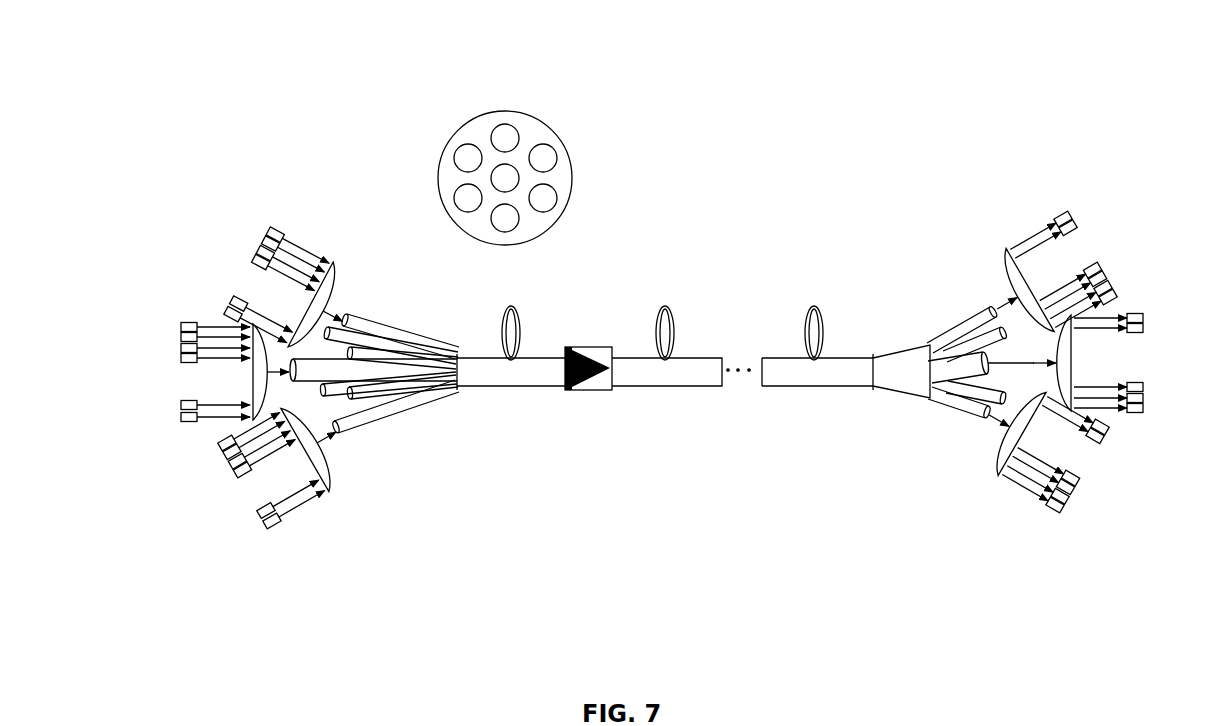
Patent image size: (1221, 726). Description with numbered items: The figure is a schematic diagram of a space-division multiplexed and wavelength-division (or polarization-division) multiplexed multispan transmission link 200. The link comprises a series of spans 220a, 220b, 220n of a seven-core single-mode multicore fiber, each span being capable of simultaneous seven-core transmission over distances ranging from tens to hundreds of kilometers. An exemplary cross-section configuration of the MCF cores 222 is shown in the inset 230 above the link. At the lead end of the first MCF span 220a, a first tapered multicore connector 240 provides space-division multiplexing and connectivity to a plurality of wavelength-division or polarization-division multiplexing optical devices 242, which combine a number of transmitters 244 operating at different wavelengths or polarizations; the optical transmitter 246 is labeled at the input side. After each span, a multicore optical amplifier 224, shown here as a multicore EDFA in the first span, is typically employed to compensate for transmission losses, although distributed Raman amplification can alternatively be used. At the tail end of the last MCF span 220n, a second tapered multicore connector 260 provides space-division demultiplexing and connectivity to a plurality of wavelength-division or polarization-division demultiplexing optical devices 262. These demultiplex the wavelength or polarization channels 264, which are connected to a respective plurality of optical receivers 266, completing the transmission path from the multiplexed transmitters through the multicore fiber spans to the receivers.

The transmission link 200 is at (640, 49).
The MCF cores 222 is at (546, 158).
The inset 230 is at (530, 180).
The transmitters 244 is at (219, 520).
The optical transmitter 246 is at (302, 619).
The multiplexing optical devices 242 is at (334, 486).
The first tapered multicore connector 240 is at (432, 468).
The first MCF span 220a is at (574, 319).
The MCF span 220b is at (732, 319).
The last MCF span 220n is at (879, 319).
The multicore optical amplifier 224 is at (599, 397).
The second tapered multicore connector 260 is at (931, 471).
The demultiplexing optical devices 262 is at (1002, 463).
The wavelength or polarization channels 264 is at (1063, 283).
The optical receivers 266 is at (1068, 504).